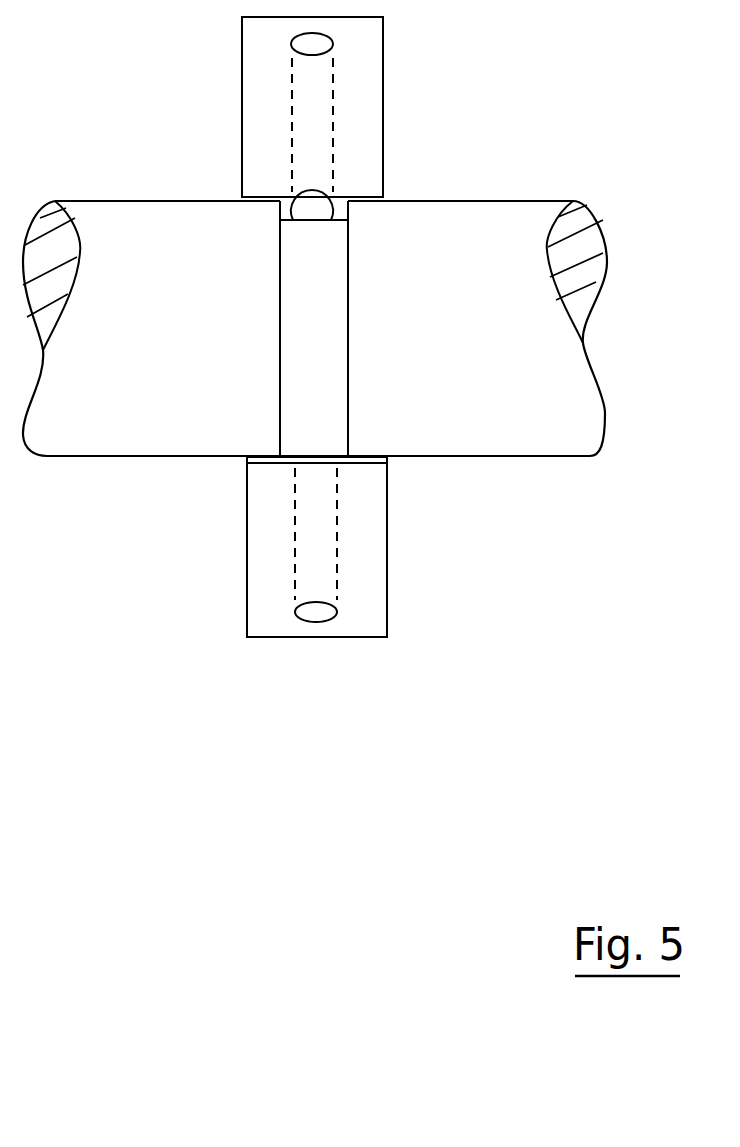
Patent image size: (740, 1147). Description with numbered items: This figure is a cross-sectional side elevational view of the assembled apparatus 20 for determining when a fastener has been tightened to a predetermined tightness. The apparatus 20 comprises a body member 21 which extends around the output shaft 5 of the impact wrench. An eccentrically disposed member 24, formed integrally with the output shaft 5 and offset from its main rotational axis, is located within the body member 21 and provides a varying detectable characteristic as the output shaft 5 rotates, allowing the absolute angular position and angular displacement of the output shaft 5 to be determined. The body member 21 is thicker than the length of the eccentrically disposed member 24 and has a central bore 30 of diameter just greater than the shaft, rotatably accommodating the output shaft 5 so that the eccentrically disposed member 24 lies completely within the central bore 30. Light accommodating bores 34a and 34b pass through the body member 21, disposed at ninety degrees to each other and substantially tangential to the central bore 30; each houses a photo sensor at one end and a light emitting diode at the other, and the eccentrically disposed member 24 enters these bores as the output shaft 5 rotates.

The output shaft 5 is at (518, 218).
The apparatus 20 is at (178, 625).
The body member 21 is at (367, 577).
The eccentrically disposed member 24 is at (297, 422).
The central bore 30 is at (367, 465).
The light accommodating bore 34a is at (318, 207).
The light accommodating bore 34b is at (317, 613).